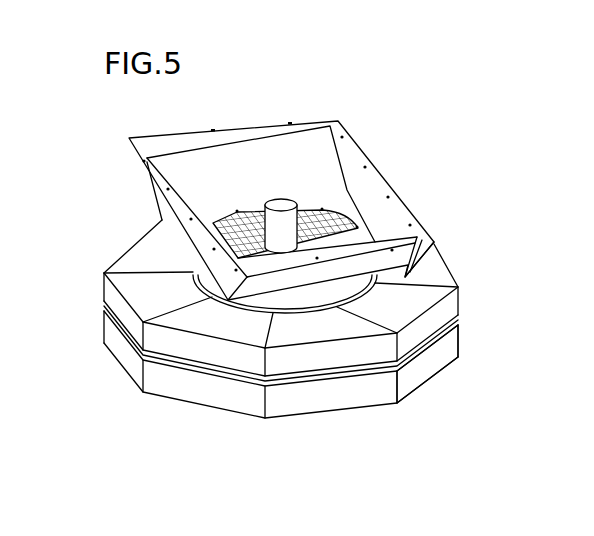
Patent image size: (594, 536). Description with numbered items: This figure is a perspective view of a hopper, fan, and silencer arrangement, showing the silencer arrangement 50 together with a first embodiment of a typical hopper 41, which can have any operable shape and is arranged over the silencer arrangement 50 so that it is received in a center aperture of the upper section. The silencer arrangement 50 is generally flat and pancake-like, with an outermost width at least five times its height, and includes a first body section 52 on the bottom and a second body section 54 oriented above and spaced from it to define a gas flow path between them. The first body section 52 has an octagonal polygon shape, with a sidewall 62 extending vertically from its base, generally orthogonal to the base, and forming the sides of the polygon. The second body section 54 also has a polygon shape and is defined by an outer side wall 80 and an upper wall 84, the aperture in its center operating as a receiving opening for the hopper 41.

The hopper 41 is at (353, 141).
The silencer arrangement 50 is at (468, 208).
The first body section 52 is at (197, 396).
The second body section 54 is at (138, 248).
The sidewall 62 is at (423, 372).
The outer side wall 80 is at (124, 312).
The upper wall 84 is at (314, 331).